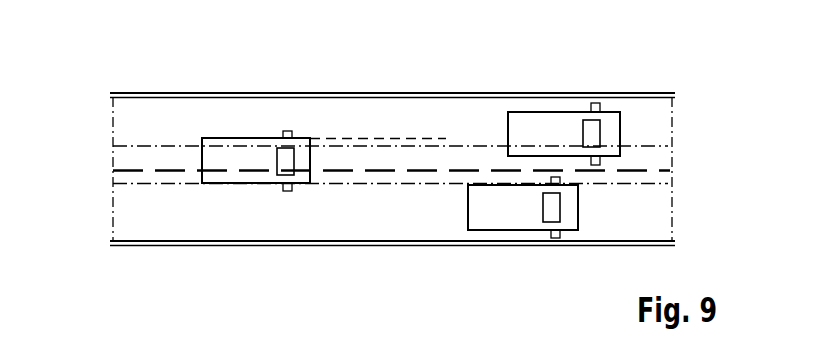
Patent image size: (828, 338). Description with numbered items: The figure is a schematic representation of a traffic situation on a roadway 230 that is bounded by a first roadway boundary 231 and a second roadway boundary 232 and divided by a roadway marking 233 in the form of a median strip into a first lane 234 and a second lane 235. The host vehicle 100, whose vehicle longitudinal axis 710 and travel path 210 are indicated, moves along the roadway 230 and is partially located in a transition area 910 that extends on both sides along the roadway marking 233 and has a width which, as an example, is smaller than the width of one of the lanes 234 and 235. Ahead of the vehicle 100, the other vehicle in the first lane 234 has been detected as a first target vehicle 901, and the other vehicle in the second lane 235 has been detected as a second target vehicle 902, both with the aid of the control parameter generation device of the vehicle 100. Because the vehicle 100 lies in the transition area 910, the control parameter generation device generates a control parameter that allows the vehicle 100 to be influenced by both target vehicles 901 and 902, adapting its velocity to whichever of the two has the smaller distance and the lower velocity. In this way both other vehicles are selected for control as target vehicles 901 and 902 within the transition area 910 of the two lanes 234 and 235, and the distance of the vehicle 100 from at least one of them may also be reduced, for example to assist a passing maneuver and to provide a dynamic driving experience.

The vehicle 100 is at (256, 163).
The travel path 210 is at (345, 138).
The roadway 230 is at (421, 171).
The first roadway boundary 231 is at (188, 246).
The second roadway boundary 232 is at (190, 92).
The roadway marking 233 is at (144, 146).
The first lane 234 is at (110, 170).
The second lane 235 is at (110, 97).
The vehicle longitudinal axis 710 is at (256, 165).
The first target vehicle 901 is at (565, 143).
The second target vehicle 902 is at (530, 218).
The transition area 910 is at (148, 188).